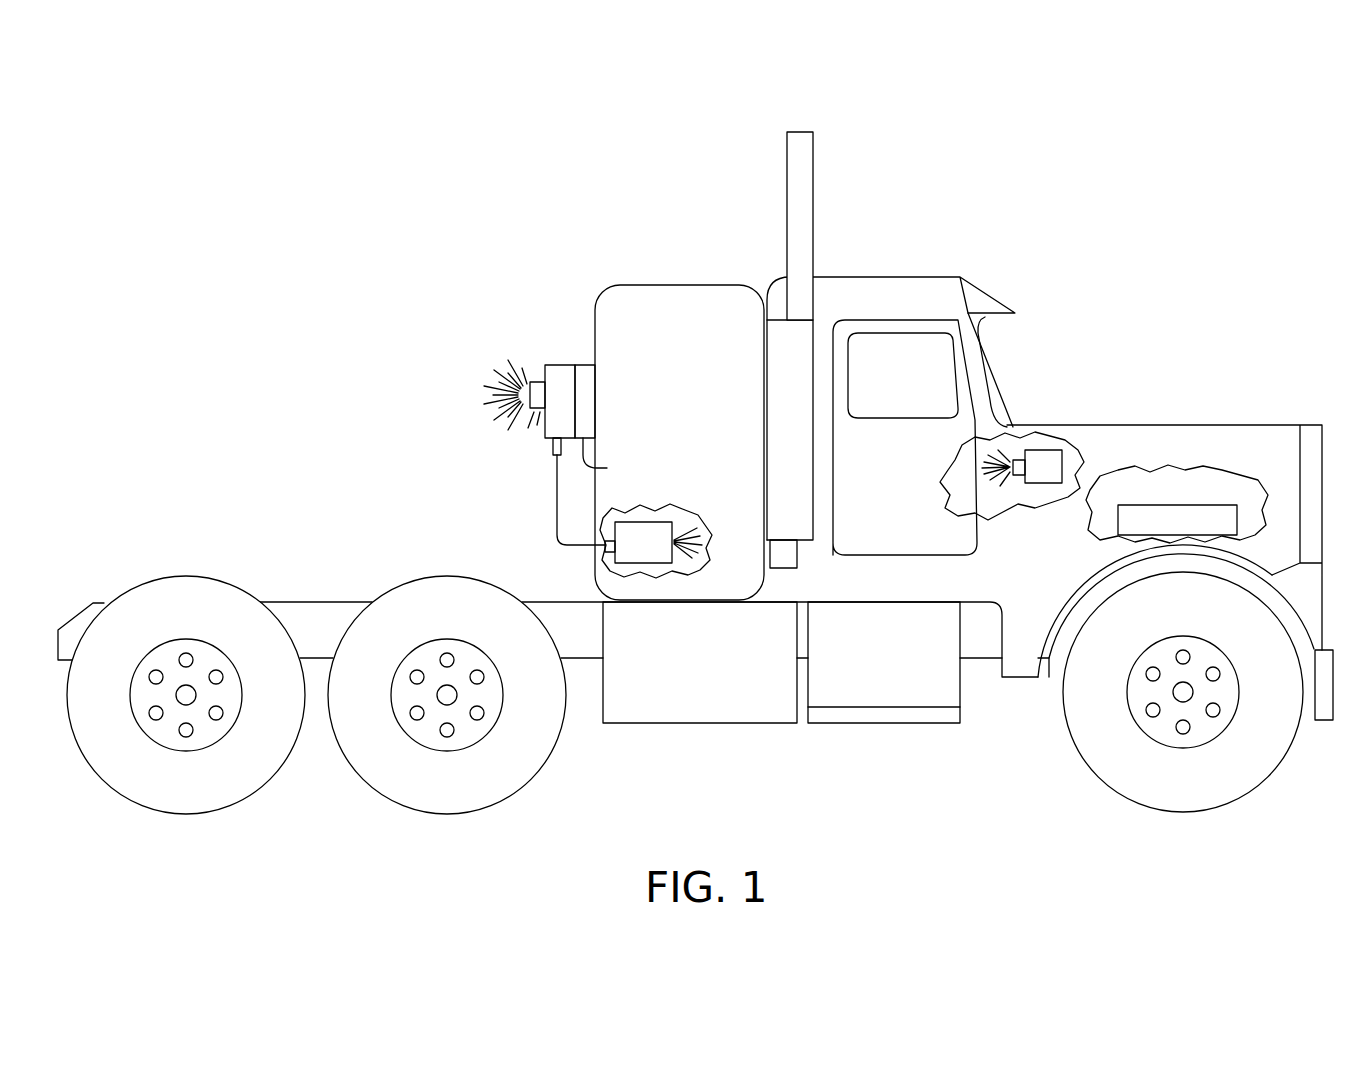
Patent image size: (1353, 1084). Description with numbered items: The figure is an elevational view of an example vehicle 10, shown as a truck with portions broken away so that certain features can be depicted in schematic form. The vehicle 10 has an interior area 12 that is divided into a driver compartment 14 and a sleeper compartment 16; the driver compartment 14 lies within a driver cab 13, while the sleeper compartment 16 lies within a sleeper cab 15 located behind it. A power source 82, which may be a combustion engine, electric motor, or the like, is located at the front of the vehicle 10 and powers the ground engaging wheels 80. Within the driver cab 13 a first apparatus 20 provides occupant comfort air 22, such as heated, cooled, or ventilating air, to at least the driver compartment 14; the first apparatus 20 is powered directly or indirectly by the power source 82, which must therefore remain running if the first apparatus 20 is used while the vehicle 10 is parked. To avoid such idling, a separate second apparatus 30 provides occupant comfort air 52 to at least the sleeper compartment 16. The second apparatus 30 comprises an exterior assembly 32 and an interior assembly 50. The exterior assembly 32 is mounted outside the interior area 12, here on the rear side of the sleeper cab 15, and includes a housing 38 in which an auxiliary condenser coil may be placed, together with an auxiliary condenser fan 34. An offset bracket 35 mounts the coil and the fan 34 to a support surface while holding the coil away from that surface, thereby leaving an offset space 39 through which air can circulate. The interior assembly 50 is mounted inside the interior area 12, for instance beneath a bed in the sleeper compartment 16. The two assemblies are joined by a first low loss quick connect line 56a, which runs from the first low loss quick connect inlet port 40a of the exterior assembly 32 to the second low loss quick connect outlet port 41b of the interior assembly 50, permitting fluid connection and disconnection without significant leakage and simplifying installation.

The vehicle 10 is at (702, 465).
The interior area 12 is at (950, 375).
The driver cab 13 is at (891, 350).
The driver compartment 14 is at (956, 484).
The sleeper cab 15 is at (681, 384).
The sleeper compartment 16 is at (678, 542).
The first apparatus 20 is at (1060, 462).
The occupant comfort air 22 is at (997, 515).
The second apparatus 30 is at (488, 401).
The exterior assembly 32 is at (582, 330).
The auxiliary condenser fan 34 is at (509, 351).
The offset bracket 35 is at (613, 461).
The housing 38 is at (557, 365).
The offset space 39 is at (588, 390).
The first low loss quick connect inlet port 40a is at (553, 447).
The second low loss quick connect outlet port 41b is at (605, 548).
The interior assembly 50 is at (658, 595).
The occupant comfort air 52 is at (707, 525).
The first low loss quick connect line 56a is at (557, 510).
The ground engaging wheels 80 is at (1268, 780).
The power source 82 is at (1212, 505).